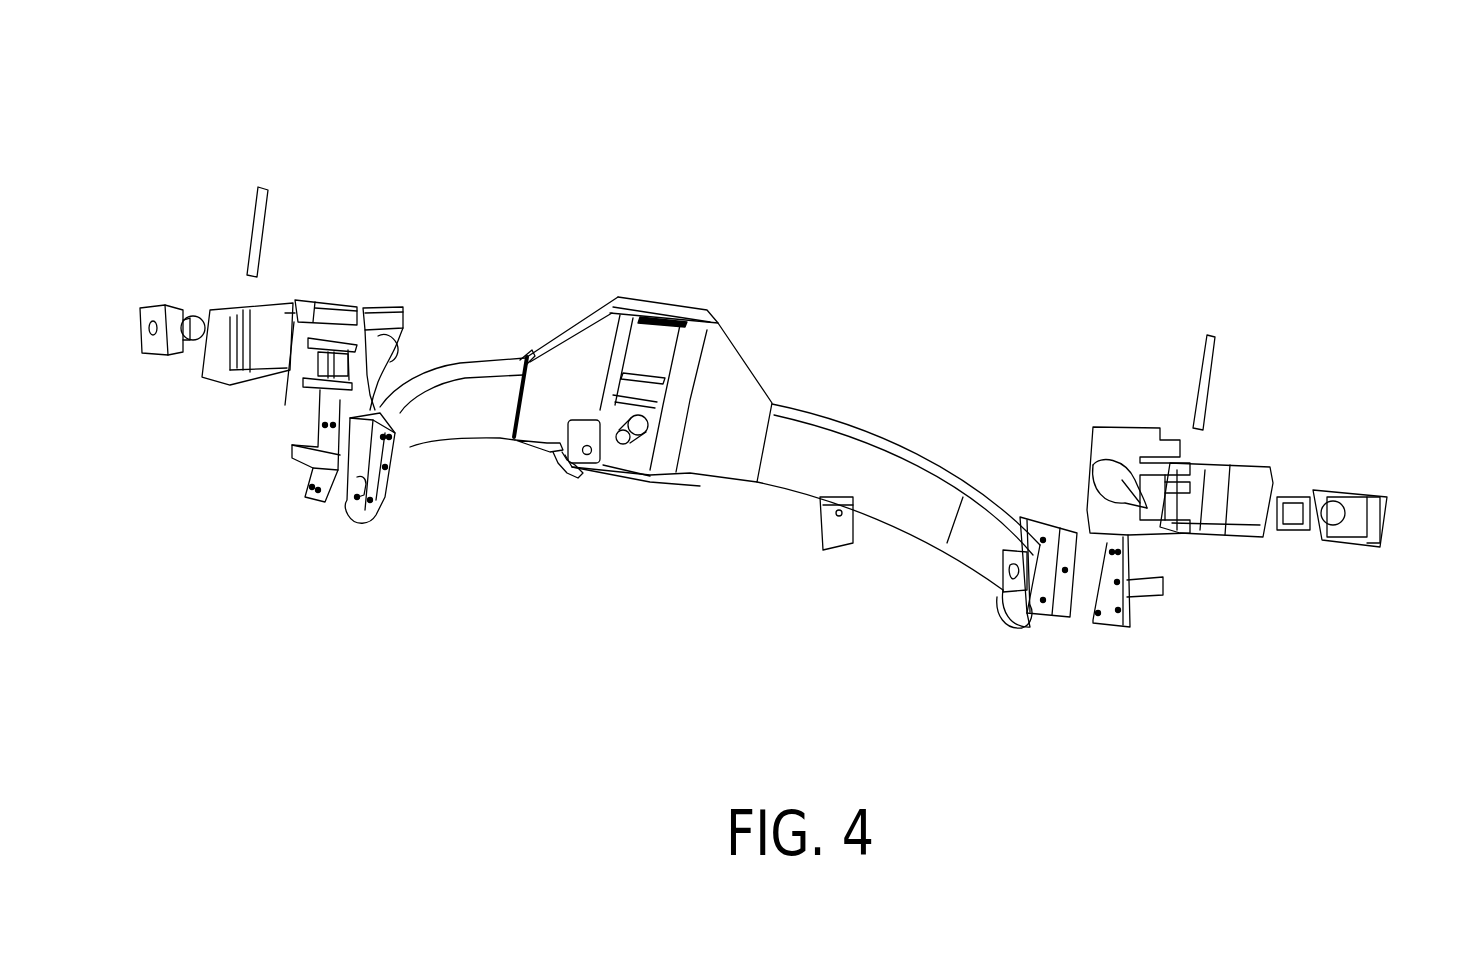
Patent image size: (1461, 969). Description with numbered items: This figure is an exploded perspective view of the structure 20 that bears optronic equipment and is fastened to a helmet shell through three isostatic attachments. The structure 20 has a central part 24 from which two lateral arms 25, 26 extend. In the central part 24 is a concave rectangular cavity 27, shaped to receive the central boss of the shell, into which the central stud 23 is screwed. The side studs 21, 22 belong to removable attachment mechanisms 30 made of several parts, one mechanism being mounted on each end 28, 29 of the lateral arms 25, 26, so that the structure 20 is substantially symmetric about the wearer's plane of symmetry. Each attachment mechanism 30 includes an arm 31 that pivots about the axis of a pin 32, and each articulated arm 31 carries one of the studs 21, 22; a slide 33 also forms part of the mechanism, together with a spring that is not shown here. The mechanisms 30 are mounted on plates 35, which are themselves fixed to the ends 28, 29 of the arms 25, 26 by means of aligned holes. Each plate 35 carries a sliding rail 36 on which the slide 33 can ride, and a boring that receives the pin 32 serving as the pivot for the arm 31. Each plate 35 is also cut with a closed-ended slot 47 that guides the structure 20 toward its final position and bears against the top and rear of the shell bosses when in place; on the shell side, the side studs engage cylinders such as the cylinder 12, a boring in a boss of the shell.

The cylinder 12 is at (1382, 497).
The structure 20 is at (893, 445).
The stud 21 is at (1340, 525).
The stud 22 is at (190, 350).
The stud 23 is at (628, 445).
The central part 24 is at (730, 370).
The lateral arm 25 is at (487, 368).
The lateral arm 26 is at (835, 422).
The concave rectangular cavity 27 is at (660, 345).
The end of lateral arm 28 is at (395, 493).
The end of lateral arm 29 is at (1057, 615).
The removable attachment mechanism 30 is at (229, 148).
The arm 31 is at (150, 300).
The pin 32 is at (265, 203).
The slide 33 is at (215, 375).
The plate 35 is at (375, 300).
The sliding rail 36 is at (370, 320).
The closed-ended slot 47 is at (377, 370).